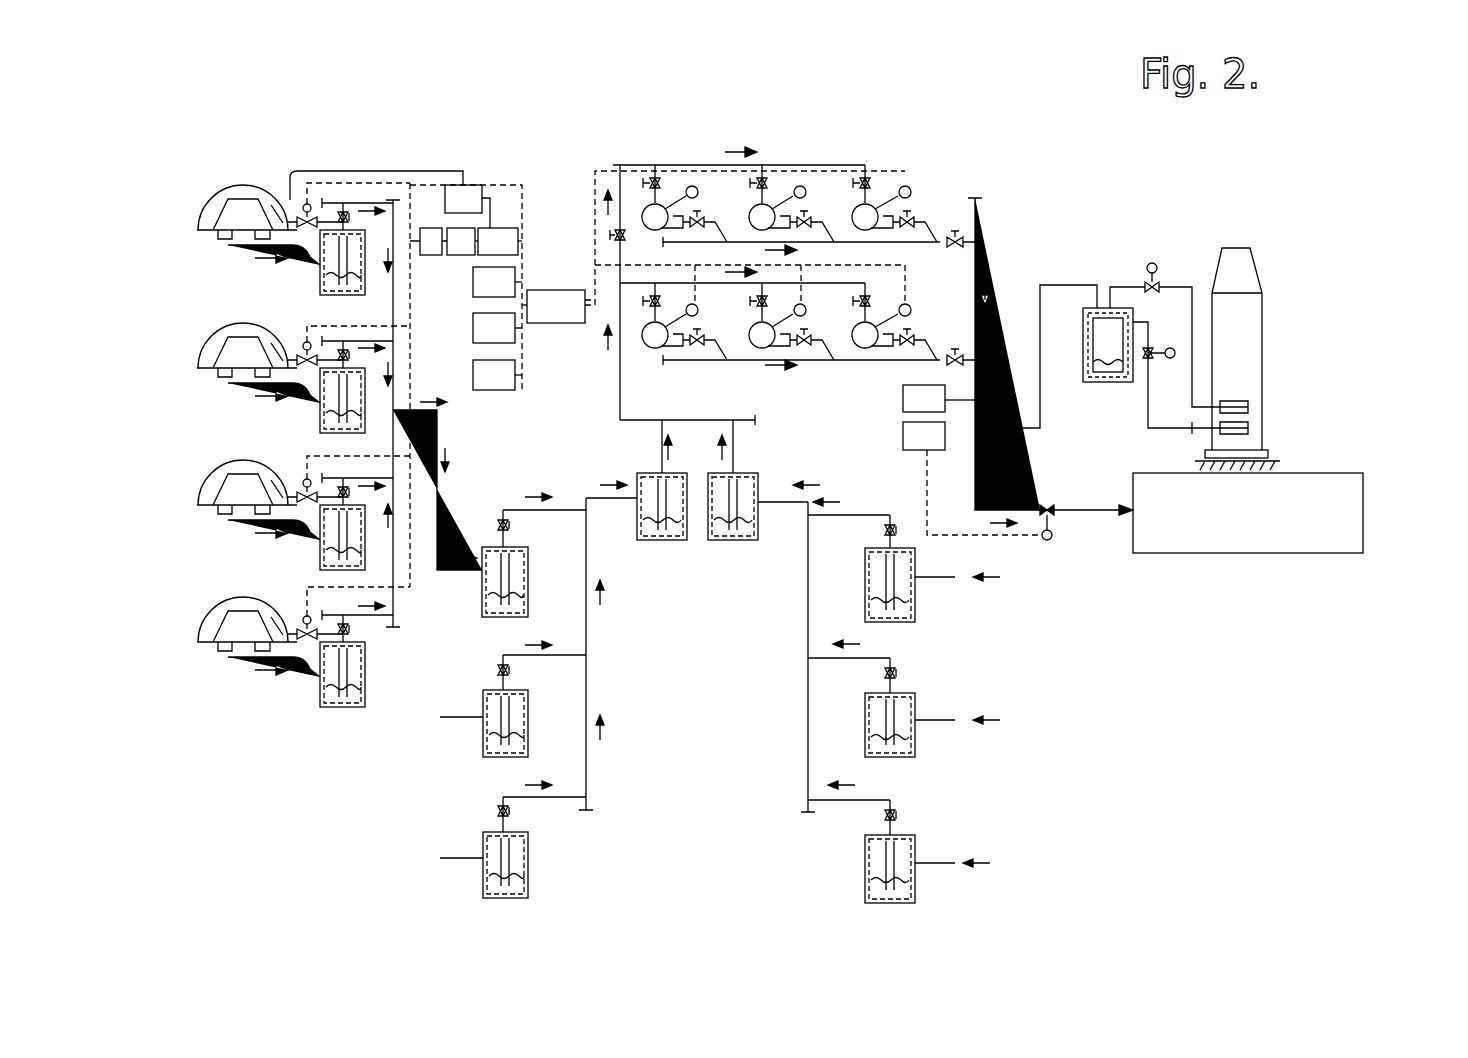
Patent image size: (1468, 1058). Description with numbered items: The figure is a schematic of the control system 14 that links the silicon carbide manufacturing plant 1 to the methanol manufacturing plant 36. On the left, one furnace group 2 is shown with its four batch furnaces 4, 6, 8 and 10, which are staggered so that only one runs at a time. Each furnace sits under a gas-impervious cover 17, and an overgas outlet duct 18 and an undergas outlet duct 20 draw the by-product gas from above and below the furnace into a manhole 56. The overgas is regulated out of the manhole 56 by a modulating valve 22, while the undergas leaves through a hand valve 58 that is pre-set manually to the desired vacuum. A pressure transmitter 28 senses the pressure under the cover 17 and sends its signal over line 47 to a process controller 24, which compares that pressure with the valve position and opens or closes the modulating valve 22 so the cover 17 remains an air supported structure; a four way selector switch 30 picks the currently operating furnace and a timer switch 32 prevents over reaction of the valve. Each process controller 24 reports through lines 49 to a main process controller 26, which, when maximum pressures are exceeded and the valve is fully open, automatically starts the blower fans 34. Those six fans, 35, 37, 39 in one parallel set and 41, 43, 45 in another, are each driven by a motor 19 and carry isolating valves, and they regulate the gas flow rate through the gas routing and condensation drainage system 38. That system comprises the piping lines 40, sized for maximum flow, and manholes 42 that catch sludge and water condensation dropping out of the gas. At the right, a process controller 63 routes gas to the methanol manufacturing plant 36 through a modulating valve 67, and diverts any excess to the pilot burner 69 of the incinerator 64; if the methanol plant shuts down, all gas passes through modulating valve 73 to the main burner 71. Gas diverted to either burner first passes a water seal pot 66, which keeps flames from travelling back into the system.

The silicon carbide manufacturing plant 1 is at (1025, 565).
The furnace group 2 is at (157, 376).
The furnace 4 is at (185, 228).
The furnace 6 is at (195, 343).
The furnace 8 is at (200, 509).
The furnace 10 is at (190, 643).
The control system 14 is at (478, 148).
The cover 17 is at (210, 200).
The overgas outlet duct 18 is at (305, 208).
The motor 19 is at (674, 175).
The undergas outlet duct 20 is at (300, 260).
The modulating valve 22 is at (307, 194).
The process controller 24 is at (498, 228).
The main process controller 26 is at (558, 323).
The pressure transmitter 28 is at (482, 185).
The four way selector switch 30 is at (431, 228).
The timer switch 32 is at (461, 255).
The blower fans 34 is at (928, 170).
The blower fan 35 is at (642, 348).
The methanol manufacturing plant 36 is at (1363, 510).
The blower fan 37 is at (748, 348).
The gas routing and condensation drainage system 38 is at (605, 655).
The blower fan 39 is at (850, 348).
The piping lines 40 is at (620, 415).
The blower fan 41 is at (637, 175).
The manholes 42 is at (528, 553).
The blower fan 43 is at (689, 203).
The blower fan 45 is at (797, 203).
The line 47 is at (397, 170).
The lines 49 is at (524, 300).
The manhole 56 is at (318, 407).
The hand valve 58 is at (344, 205).
The process controller 63 is at (903, 436).
The incinerator 64 is at (1262, 317).
The water seal pot 66 is at (1083, 345).
The modulating valve 67 is at (1053, 530).
The pilot burner 69 is at (1248, 428).
The main burner 71 is at (1248, 407).
The modulating valve 73 is at (1153, 263).